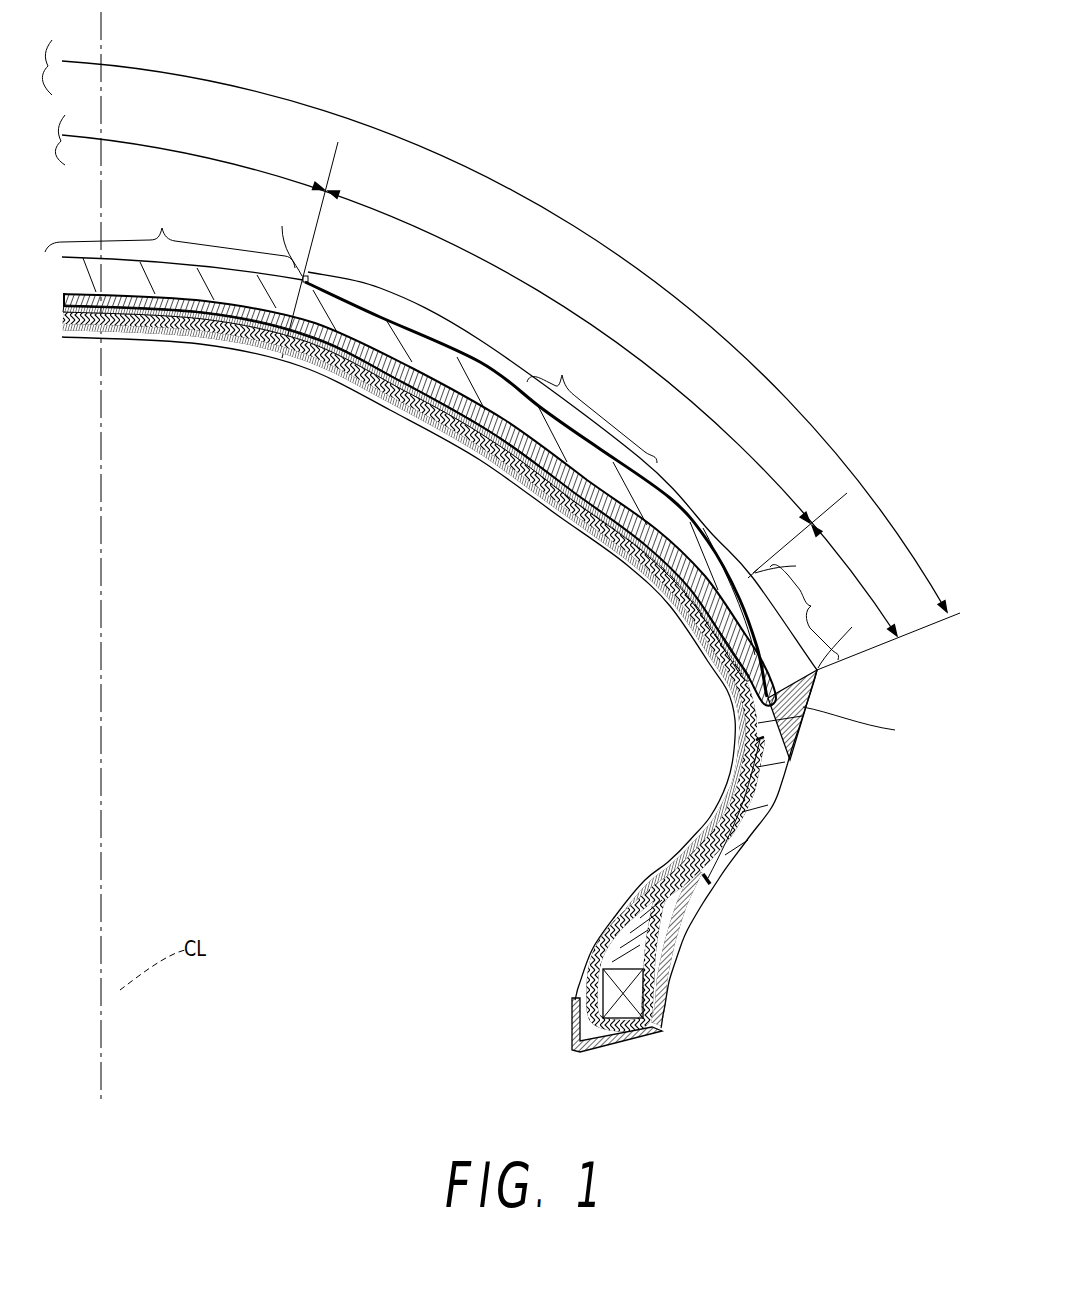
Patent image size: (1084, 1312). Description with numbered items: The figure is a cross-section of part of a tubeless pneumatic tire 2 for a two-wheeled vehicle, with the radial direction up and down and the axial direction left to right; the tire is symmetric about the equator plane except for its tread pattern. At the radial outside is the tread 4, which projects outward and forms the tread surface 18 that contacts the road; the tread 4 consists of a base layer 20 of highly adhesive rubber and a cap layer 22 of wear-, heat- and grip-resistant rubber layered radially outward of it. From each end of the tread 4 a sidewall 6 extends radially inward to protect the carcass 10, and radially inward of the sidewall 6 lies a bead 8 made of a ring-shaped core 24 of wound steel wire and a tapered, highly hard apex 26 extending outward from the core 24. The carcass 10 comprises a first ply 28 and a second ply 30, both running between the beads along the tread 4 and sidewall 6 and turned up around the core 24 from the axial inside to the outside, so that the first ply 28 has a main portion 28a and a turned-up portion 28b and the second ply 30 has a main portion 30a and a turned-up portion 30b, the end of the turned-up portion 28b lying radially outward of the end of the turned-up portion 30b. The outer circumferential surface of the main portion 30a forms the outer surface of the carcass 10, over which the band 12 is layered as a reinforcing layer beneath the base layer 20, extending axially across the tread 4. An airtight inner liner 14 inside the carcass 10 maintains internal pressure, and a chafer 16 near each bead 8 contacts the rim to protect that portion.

The pneumatic tire 2 is at (703, 143).
The tread 4 is at (640, 472).
The sidewall 6 is at (750, 835).
The bead 8 is at (790, 940).
The carcass 10 is at (388, 490).
The band 12 is at (157, 330).
The inner liner 14 is at (540, 500).
The chafer 16 is at (574, 1050).
The tread surface 18 is at (703, 528).
The base layer 20 is at (237, 340).
The cap layer 22 is at (123, 283).
The core 24 is at (636, 993).
The apex 26 is at (677, 935).
The first ply 28 is at (373, 372).
The main portion 28a is at (700, 830).
The turned-up portion 28b is at (753, 808).
The second ply 30 is at (313, 357).
The main portion 30a is at (283, 343).
The turned-up portion 30b is at (715, 878).